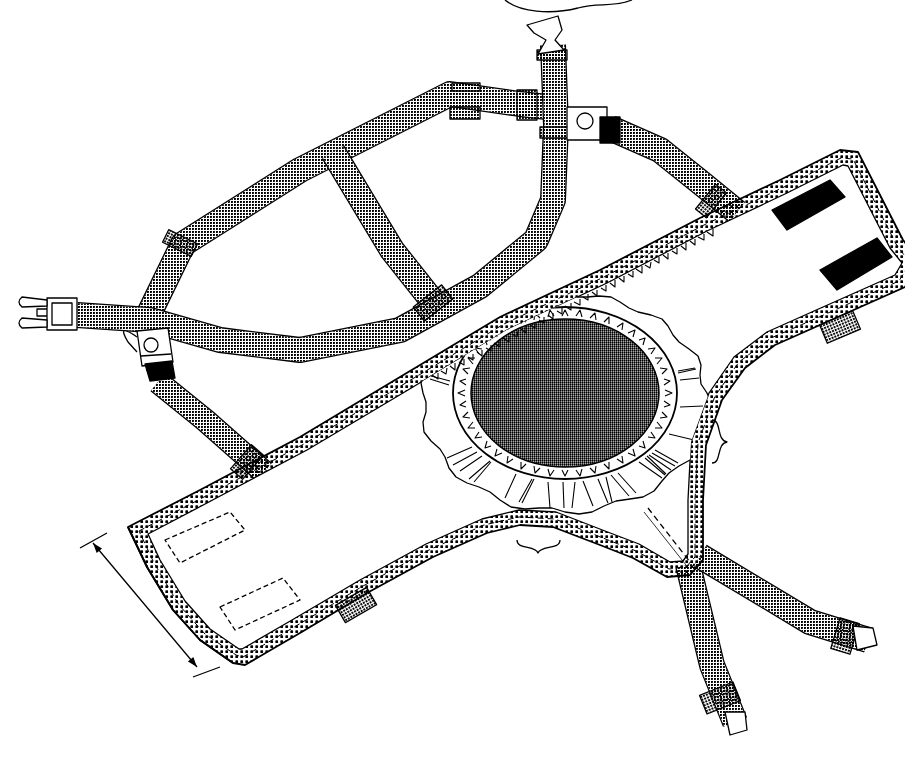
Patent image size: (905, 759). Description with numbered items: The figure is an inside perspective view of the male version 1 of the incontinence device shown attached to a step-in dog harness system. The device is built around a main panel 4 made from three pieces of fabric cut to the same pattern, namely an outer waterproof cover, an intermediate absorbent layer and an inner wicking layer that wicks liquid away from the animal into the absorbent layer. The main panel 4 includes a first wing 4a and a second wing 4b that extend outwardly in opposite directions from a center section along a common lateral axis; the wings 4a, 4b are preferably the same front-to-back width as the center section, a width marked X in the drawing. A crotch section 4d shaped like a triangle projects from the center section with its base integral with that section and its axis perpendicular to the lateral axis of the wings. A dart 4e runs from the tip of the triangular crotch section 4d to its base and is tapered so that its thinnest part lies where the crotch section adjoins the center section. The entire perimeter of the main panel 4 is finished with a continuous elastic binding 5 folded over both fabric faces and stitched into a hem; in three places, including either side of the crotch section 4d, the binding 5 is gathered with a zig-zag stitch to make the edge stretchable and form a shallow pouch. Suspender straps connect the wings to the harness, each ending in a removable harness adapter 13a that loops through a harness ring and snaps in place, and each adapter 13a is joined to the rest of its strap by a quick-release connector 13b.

The male version of the incontinence device 1 is at (817, 128).
The main panel 4 is at (423, 477).
The first wing 4a is at (807, 243).
The second wing 4b is at (212, 568).
The crotch section 4d is at (700, 489).
The dart 4e is at (667, 524).
The elastic binding 5 is at (158, 522).
The harness adapter 13a is at (137, 350).
The quick-release connector 13b is at (150, 374).